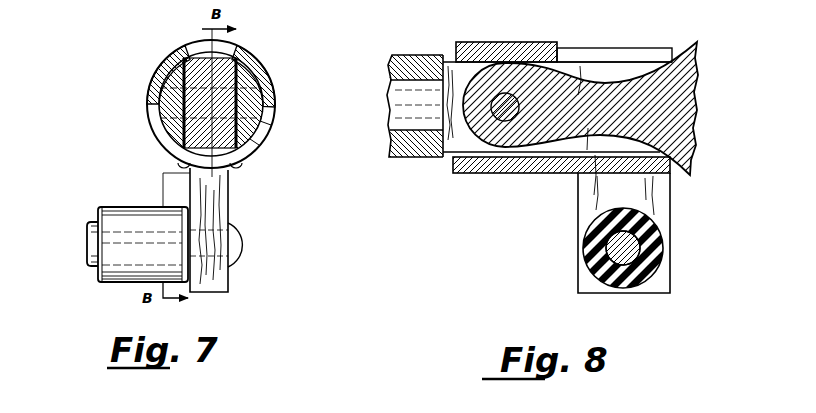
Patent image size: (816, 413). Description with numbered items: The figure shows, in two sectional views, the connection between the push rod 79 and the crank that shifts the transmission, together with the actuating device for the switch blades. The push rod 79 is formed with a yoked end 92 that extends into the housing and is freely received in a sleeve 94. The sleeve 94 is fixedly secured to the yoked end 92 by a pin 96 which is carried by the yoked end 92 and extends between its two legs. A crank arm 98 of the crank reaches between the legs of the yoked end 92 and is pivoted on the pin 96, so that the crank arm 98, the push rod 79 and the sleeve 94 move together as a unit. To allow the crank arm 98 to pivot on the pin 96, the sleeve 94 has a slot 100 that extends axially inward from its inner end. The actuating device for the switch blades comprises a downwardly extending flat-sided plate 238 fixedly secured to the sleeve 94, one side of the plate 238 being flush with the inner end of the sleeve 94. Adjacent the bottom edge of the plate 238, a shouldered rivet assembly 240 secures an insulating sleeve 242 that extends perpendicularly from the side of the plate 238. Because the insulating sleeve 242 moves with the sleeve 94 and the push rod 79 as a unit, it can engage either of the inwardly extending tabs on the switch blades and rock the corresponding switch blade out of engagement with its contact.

In FIG. 8, the push rod 79 is at (421, 158).
In FIG. 7, the yoked end 92 is at (264, 127).
In FIG. 8, the yoked end 92 is at (447, 56).
In FIG. 7, the sleeve 94 is at (273, 102).
In FIG. 8, the sleeve 94 is at (497, 46).
In FIG. 7, the pin 96 is at (151, 127).
In FIG. 8, the pin 96 is at (489, 173).
In FIG. 7, the crank arm 98 is at (243, 155).
In FIG. 8, the crank arm 98 is at (690, 120).
In FIG. 7, the slot 100 is at (193, 50).
In FIG. 8, the slot 100 is at (621, 56).
In FIG. 7, the plate 238 is at (228, 205).
In FIG. 8, the plate 238 is at (578, 202).
In FIG. 7, the shouldered rivet assembly 240 is at (88, 256).
In FIG. 8, the shouldered rivet assembly 240 is at (640, 252).
In FIG. 7, the insulating sleeve 242 is at (130, 196).
In FIG. 8, the insulating sleeve 242 is at (632, 278).